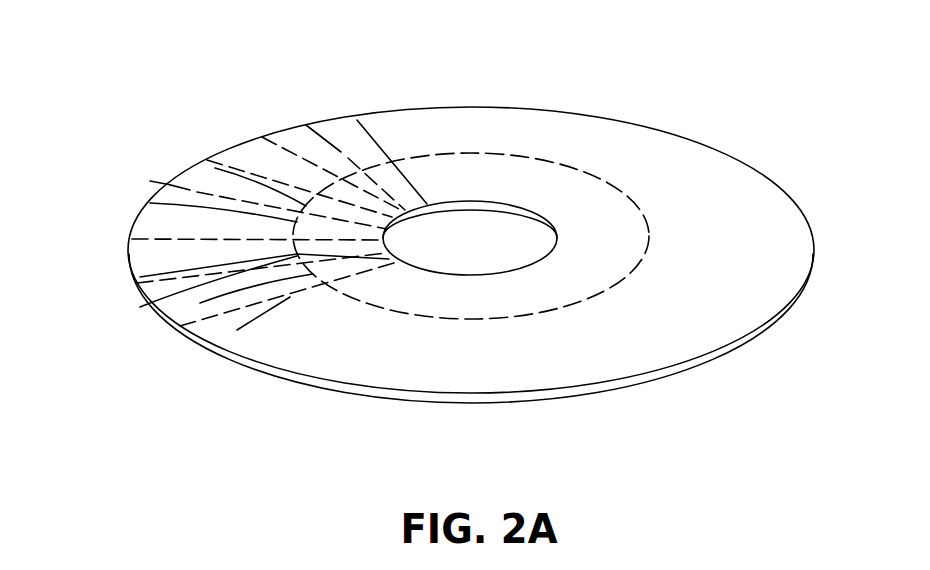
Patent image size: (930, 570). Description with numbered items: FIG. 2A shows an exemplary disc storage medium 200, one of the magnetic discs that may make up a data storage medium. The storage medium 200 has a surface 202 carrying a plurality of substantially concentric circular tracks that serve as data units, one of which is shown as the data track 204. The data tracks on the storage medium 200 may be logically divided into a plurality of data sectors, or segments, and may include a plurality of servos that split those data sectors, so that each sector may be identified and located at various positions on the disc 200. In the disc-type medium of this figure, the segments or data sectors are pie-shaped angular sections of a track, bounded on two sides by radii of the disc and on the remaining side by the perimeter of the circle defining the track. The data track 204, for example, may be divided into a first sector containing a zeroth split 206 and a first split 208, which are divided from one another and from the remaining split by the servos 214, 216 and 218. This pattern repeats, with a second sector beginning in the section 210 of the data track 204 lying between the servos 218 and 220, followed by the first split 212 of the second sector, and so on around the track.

The disc storage medium 200 is at (695, 93).
The surface 202 is at (470, 133).
The data track 204 is at (613, 284).
The split 0 206 is at (200, 303).
The split 1 208 is at (140, 277).
The section of the data track 210 is at (150, 203).
The split 1 of sector 2 212 is at (215, 168).
The servo 214 is at (237, 330).
The servo 216 is at (140, 307).
The servo 218 is at (132, 239).
The servo 220 is at (150, 181).